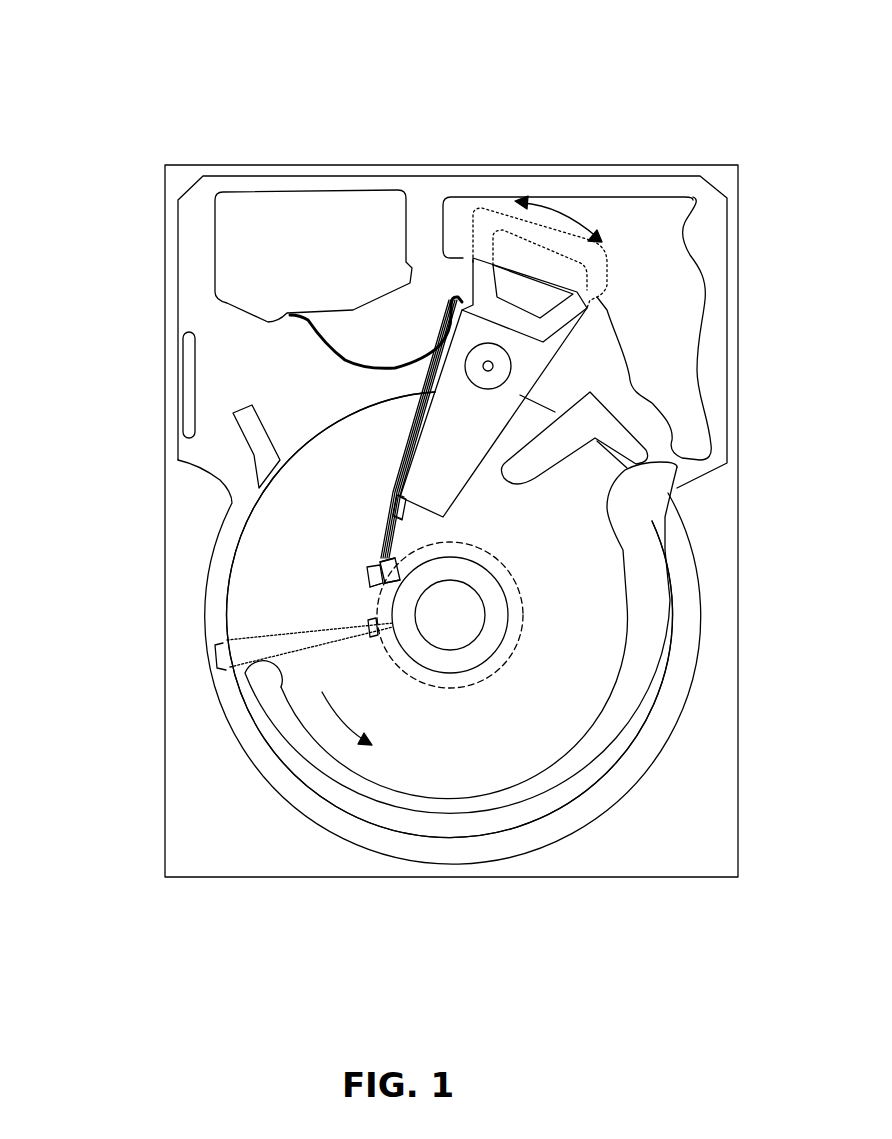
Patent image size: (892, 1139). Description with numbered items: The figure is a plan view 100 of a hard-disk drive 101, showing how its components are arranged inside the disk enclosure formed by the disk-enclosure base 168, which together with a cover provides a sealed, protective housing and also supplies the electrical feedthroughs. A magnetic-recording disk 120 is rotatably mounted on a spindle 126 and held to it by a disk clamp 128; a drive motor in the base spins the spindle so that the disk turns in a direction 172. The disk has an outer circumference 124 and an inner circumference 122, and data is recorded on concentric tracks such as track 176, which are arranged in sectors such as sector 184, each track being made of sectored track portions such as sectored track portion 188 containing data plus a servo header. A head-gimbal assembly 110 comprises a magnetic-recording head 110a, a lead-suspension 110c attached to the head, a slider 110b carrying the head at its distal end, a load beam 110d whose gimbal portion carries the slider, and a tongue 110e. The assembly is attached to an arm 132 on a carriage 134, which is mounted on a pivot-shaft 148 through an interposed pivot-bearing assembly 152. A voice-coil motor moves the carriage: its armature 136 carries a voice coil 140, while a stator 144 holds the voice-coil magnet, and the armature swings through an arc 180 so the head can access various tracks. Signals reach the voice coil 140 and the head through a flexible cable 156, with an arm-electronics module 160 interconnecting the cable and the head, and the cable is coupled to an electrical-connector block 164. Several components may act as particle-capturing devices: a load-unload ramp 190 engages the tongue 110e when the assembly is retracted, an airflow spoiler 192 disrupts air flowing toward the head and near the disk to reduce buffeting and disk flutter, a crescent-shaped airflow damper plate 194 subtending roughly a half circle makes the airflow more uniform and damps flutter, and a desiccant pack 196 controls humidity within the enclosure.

The plan view 100 is at (188, 82).
The hard-disk drive 101 is at (714, 152).
The disk-enclosure base 168 is at (727, 180).
The electrical-connector block 164 is at (235, 253).
The desiccant pack 196 is at (190, 383).
The load-unload ramp 190 is at (258, 458).
The flexible cable 156 is at (328, 347).
The arm-electronics module 160 is at (446, 337).
The stator 144 is at (672, 285).
The armature 136 is at (468, 275).
The voice coil 140 is at (482, 273).
The arc 180 is at (565, 215).
The arm 132 is at (445, 460).
The carriage 134 is at (493, 392).
The pivot-bearing assembly 152 is at (470, 362).
The pivot-shaft 148 is at (493, 366).
The airflow spoiler 192 is at (557, 445).
The airflow damper plate 194 is at (647, 612).
The magnetic-recording disk 120 is at (577, 523).
The inner circumference 122 is at (507, 593).
The outer circumference 124 is at (673, 570).
The track 176 is at (517, 583).
The disk clamp 128 is at (502, 645).
The spindle 126 is at (452, 618).
The direction 172 is at (357, 728).
The sector 184 is at (213, 658).
The sectored track portion 188 is at (370, 633).
The head-gimbal assembly 110 is at (85, 472).
The magnetic-recording head 110a is at (387, 583).
The slider 110b is at (373, 560).
The lead-suspension 110c is at (400, 538).
The load beam 110d is at (413, 522).
The tongue 110e is at (380, 592).